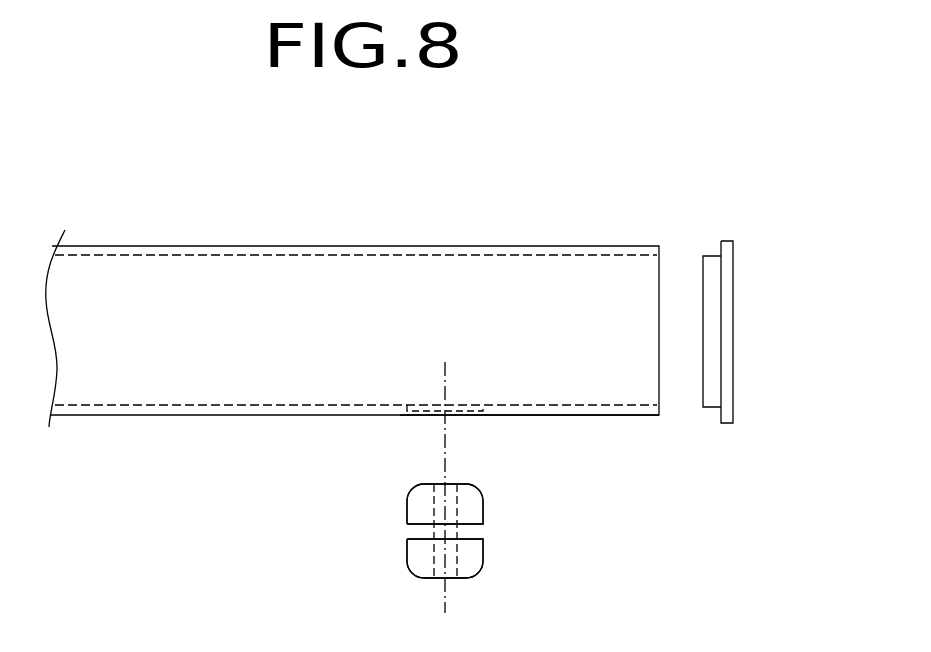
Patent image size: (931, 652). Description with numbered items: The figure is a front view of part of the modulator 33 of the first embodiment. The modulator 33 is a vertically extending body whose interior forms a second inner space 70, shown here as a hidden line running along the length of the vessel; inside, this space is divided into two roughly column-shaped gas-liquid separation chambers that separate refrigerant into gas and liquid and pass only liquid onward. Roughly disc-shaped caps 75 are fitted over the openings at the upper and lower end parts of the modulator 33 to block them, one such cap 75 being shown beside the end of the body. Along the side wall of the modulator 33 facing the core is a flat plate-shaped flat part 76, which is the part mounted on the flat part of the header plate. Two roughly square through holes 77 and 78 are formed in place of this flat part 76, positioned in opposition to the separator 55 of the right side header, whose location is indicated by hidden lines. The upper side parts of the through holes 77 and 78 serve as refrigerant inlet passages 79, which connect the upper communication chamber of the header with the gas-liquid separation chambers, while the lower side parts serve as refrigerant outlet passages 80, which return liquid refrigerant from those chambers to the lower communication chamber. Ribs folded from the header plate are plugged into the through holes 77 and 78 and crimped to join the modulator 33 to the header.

The modulator 33 is at (530, 232).
The second inner space 70 is at (256, 283).
The caps 75 is at (727, 323).
The flat part 76 is at (606, 417).
The through hole 77 is at (312, 450).
The through hole 78 is at (312, 548).
The refrigerant inlet passages 79 is at (413, 507).
The refrigerant outlet passages 80 is at (462, 487).
The separator 55 is at (458, 553).